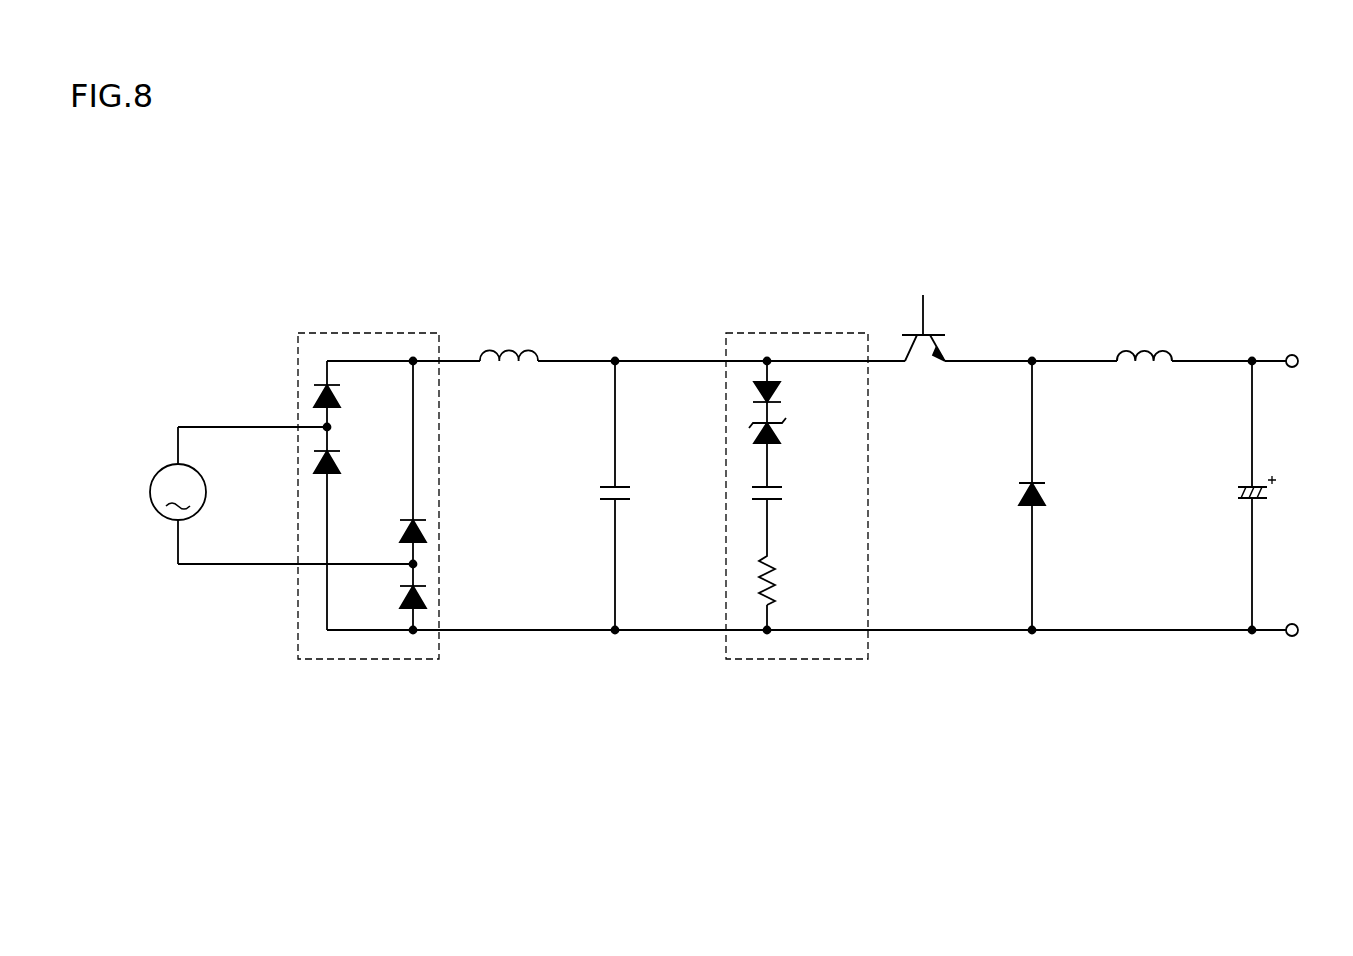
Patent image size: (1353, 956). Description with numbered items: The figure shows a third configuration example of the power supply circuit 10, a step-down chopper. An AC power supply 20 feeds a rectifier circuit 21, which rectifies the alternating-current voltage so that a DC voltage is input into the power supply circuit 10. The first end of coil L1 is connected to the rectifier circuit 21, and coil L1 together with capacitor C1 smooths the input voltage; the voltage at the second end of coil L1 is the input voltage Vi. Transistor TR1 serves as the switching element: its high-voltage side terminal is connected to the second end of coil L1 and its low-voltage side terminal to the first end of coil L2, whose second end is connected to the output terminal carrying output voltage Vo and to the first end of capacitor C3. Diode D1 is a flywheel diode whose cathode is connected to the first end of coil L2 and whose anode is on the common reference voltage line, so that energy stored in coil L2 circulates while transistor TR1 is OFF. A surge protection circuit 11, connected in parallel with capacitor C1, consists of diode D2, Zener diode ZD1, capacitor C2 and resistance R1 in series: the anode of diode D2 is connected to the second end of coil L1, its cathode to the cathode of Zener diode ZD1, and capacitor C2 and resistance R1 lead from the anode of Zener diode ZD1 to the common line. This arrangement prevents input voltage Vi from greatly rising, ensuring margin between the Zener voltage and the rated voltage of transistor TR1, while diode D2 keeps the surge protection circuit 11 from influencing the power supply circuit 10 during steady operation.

The power supply circuit 10 is at (1259, 281).
The surge protection circuit 11 is at (796, 333).
The AC power supply 20 is at (162, 466).
The rectifier circuit 21 is at (367, 333).
The coil L1 is at (512, 346).
The coil L2 is at (1145, 346).
The capacitor C1 is at (625, 487).
The capacitor C2 is at (777, 487).
The capacitor C3 is at (1257, 500).
The diode D1 is at (1042, 483).
The diode D2 is at (780, 390).
The Zener diode ZD1 is at (778, 412).
The resistance R1 is at (777, 571).
The transistor TR1 is at (938, 337).
The input voltage Vi is at (611, 349).
The output voltage Vo is at (1316, 362).